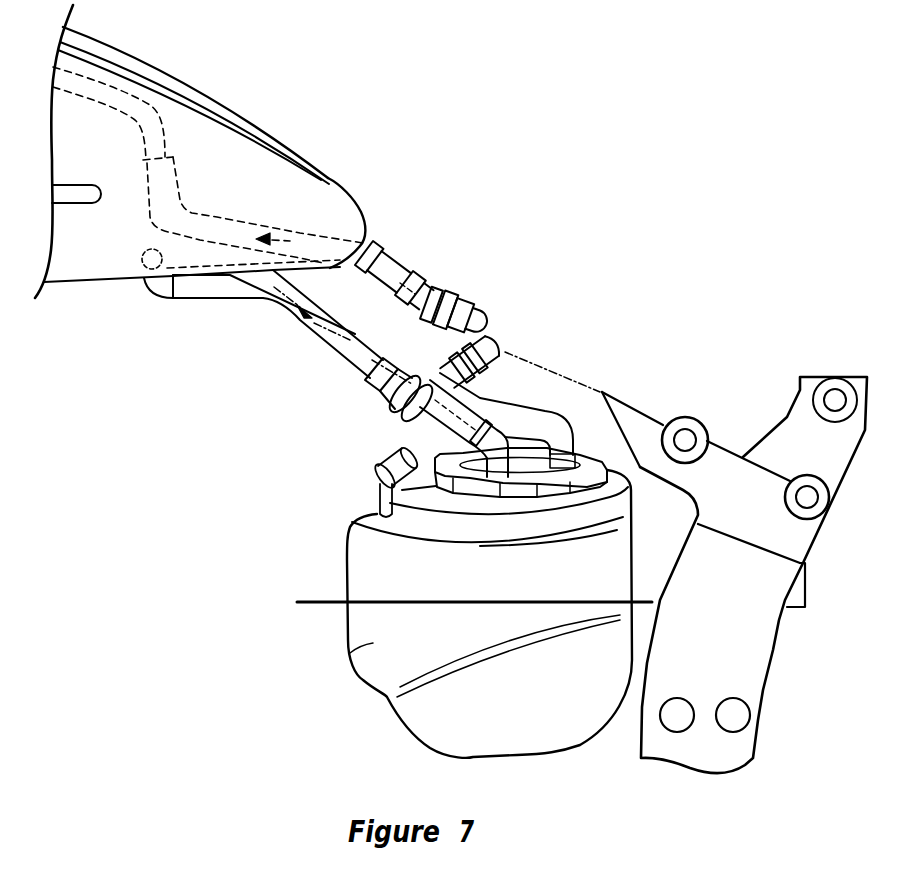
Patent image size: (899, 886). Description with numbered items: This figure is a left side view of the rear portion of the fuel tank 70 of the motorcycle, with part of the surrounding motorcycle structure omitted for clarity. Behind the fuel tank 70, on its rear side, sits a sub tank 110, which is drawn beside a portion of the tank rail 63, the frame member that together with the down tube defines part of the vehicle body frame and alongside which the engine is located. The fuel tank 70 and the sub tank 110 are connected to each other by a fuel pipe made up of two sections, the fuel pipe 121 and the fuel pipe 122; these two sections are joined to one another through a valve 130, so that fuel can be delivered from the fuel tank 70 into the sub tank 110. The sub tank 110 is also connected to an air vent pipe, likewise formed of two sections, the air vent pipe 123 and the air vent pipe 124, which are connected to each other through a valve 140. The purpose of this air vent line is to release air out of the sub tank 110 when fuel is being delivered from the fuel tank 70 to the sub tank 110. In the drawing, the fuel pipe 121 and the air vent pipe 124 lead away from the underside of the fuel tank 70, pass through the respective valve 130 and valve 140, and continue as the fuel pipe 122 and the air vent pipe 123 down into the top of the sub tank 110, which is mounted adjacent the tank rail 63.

The fuel tank 70 is at (267, 160).
The fuel pipe 121 is at (327, 331).
The valve 130 is at (388, 418).
The air vent pipe 124 is at (378, 261).
The valve 140 is at (472, 292).
The fuel pipe 122 is at (430, 440).
The air vent pipe 123 is at (554, 415).
The sub tank 110 is at (348, 650).
The tank rail 63 is at (627, 418).